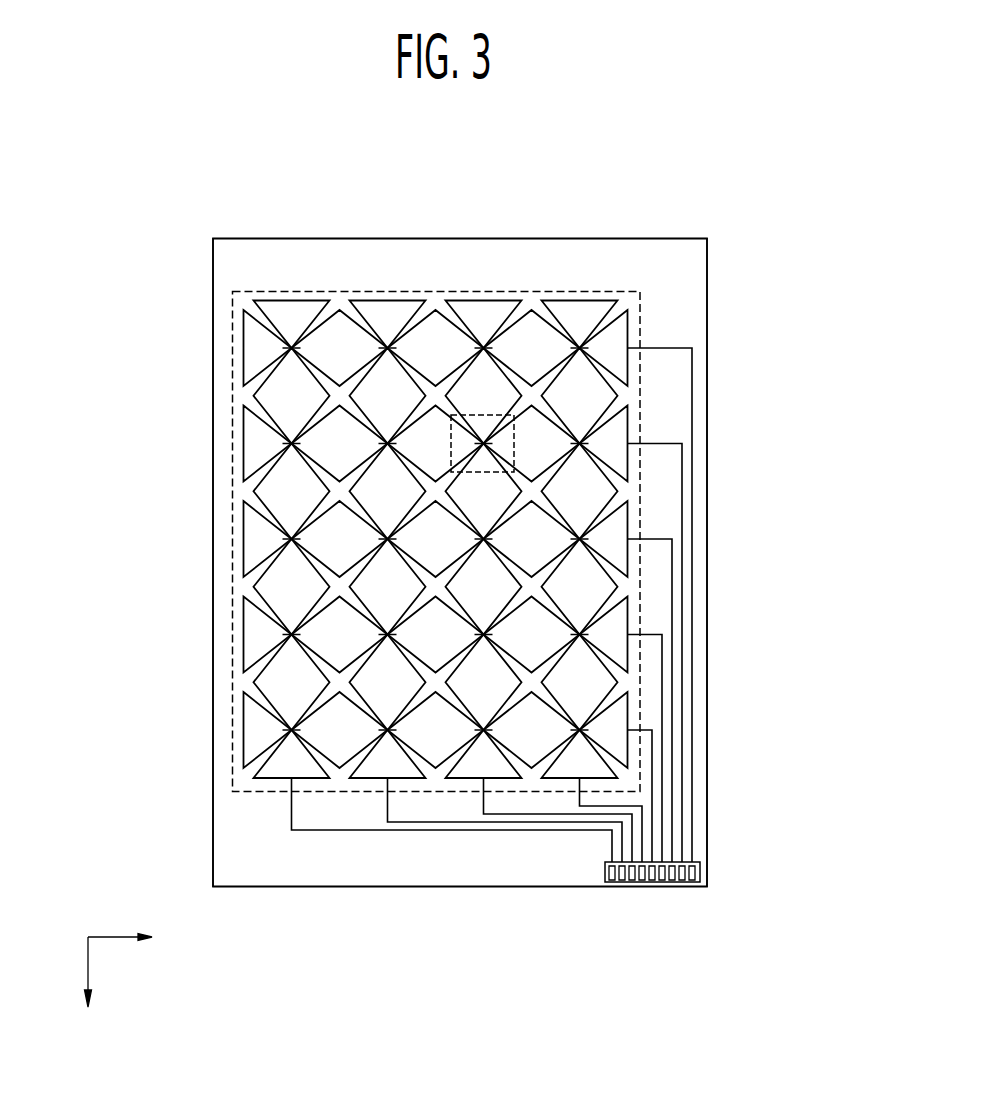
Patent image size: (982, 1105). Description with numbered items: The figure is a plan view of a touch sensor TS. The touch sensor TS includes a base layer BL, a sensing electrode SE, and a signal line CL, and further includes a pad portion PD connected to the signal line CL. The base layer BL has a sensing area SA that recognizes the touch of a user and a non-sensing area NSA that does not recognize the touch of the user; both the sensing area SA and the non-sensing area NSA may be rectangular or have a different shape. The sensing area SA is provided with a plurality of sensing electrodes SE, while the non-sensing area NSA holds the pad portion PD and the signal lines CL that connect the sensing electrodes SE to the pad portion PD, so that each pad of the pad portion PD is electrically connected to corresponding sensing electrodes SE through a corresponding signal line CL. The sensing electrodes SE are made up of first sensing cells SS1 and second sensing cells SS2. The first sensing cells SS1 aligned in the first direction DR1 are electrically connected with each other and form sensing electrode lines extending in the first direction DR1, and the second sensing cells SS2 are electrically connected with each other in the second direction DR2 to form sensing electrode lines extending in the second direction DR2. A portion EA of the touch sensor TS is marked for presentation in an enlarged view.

The touch sensor TS is at (303, 218).
The non-sensing area NSA is at (223, 592).
The sensing area SA is at (248, 491).
The sensing electrode SE is at (358, 526).
The first sensing cells SS1 is at (337, 350).
The second sensing cells SS2 is at (297, 312).
The portion EA is at (497, 415).
The base layer BL is at (212, 725).
The signal line CL is at (693, 428).
The pad portion PD is at (606, 865).
The first direction DR1 is at (137, 937).
The second direction DR2 is at (89, 990).